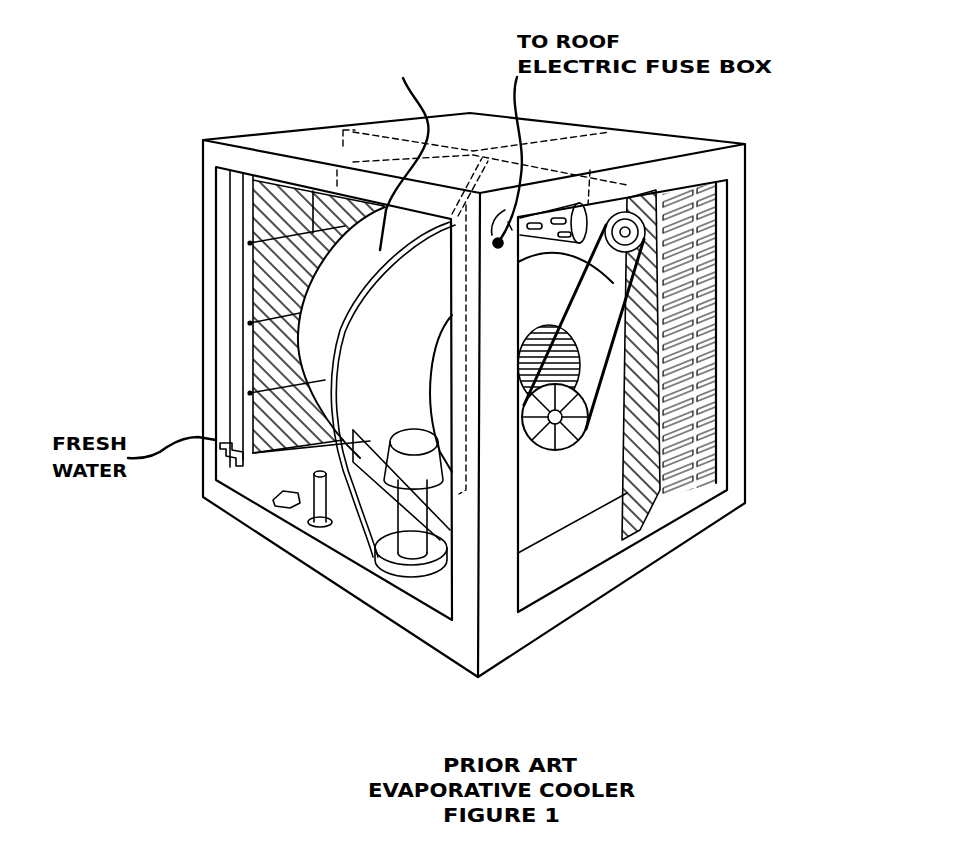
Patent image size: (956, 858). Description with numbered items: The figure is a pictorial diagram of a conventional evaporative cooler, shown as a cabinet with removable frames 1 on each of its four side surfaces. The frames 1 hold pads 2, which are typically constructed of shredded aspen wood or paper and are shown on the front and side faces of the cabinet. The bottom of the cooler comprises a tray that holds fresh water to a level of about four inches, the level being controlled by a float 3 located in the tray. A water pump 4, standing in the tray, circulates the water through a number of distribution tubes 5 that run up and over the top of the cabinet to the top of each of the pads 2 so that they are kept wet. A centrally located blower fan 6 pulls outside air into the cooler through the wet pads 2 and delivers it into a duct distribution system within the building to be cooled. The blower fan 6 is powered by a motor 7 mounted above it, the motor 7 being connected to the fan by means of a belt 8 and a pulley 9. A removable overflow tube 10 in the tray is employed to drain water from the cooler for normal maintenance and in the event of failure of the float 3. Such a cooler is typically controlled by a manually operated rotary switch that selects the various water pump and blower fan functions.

The removable frame 1 is at (240, 228).
The pad 2 is at (267, 268).
The float 3 is at (270, 481).
The water pump 4 is at (407, 543).
The distribution tube 5 is at (482, 272).
The blower fan 6 is at (565, 357).
The motor 7 is at (599, 215).
The belt 8 is at (597, 335).
The pulley 9 is at (560, 430).
The removable overflow tube 10 is at (313, 523).